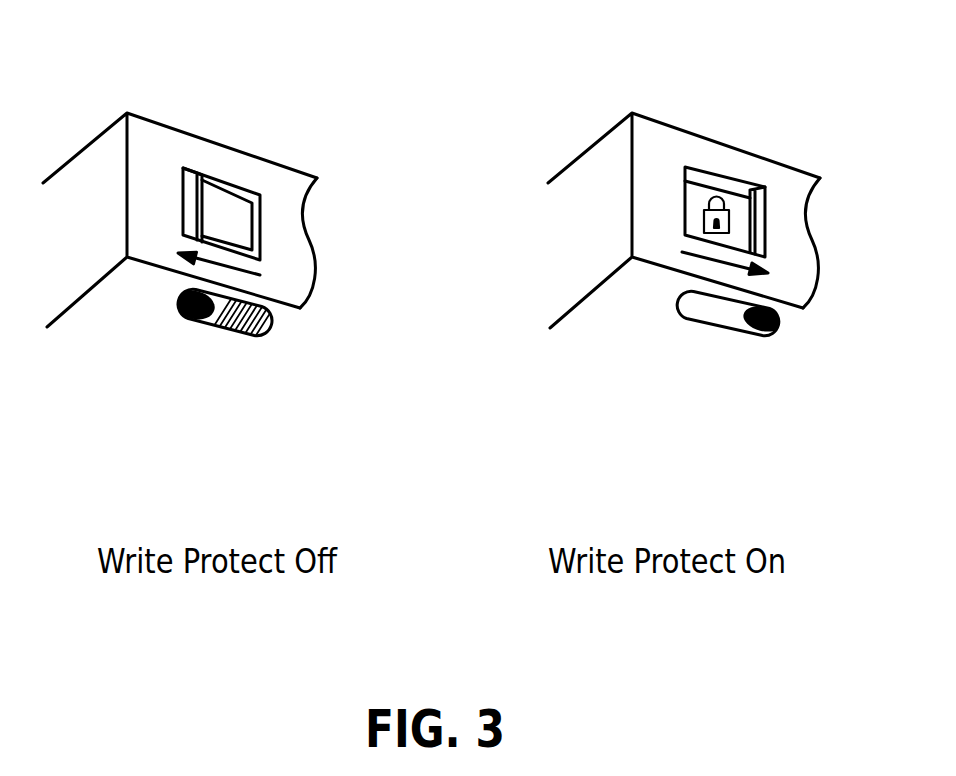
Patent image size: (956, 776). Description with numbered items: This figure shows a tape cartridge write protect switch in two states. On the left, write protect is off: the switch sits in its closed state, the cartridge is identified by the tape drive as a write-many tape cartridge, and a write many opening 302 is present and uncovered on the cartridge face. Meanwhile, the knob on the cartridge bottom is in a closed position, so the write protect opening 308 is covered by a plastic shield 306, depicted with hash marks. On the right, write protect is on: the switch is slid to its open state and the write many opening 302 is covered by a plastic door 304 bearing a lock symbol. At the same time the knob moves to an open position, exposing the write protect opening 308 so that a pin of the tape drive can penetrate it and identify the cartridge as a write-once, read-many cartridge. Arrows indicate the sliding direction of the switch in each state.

The write many opening 302 is at (233, 226).
The door 304 is at (703, 190).
The plastic shield 306 is at (233, 320).
The write protect opening 308 is at (723, 313).